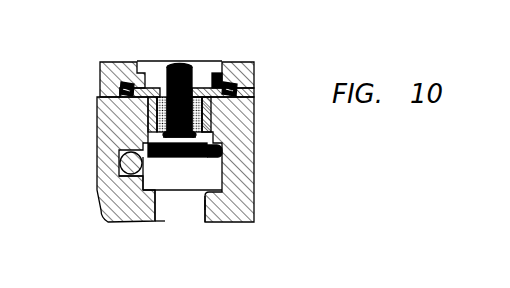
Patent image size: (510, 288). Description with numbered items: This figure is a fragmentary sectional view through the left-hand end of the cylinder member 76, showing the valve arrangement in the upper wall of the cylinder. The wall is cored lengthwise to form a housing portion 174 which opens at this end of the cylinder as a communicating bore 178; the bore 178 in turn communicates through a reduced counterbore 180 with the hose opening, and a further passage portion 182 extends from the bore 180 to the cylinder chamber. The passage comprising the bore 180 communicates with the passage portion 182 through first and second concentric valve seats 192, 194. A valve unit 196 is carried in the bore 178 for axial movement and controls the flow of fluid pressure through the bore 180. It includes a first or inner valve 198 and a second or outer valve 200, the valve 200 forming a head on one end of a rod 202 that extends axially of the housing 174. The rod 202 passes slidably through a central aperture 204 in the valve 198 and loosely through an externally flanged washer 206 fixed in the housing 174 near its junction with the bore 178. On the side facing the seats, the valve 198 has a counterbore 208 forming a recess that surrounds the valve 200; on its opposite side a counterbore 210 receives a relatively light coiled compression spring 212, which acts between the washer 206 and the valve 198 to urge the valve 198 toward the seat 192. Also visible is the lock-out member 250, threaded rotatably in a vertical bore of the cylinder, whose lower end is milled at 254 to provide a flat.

The cylinder member 76 is at (255, 208).
The housing portion 174 is at (208, 67).
The communicating bore 178 is at (220, 137).
The reduced counterbore 180 is at (180, 219).
The passage portion 182 is at (212, 174).
The first valve seat 192 is at (206, 192).
The second valve seat 194 is at (206, 202).
The valve unit 196 is at (183, 163).
The first valve 198 is at (252, 114).
The second valve 200 is at (152, 143).
The rod 202 is at (176, 70).
The central aperture 204 is at (150, 140).
The externally flanged washer 206 is at (223, 77).
The counterbore 208 is at (222, 156).
The counterbore 210 is at (110, 108).
The coiled compression spring 212 is at (252, 100).
The lock-out member 250 is at (122, 165).
The flat 254 is at (137, 176).